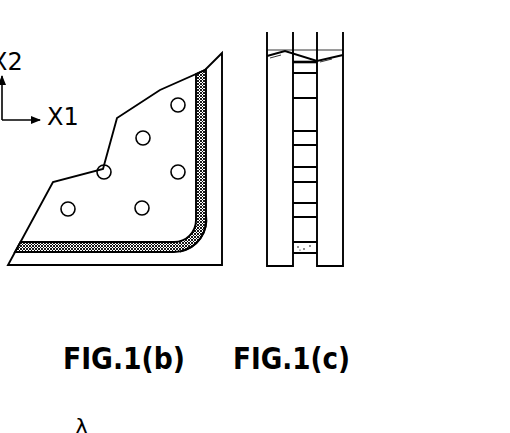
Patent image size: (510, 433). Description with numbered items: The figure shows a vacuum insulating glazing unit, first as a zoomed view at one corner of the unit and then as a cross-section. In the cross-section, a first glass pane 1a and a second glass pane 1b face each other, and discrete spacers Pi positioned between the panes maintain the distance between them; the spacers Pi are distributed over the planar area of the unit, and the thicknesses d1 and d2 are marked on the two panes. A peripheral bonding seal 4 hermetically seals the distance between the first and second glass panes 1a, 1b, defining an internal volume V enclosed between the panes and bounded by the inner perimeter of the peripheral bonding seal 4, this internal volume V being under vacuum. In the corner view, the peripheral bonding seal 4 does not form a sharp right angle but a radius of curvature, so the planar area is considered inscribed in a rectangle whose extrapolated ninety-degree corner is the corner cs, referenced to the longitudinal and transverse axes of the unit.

In FIG. 1B, the first glass pane 1a is at (218, 98).
In FIG. 1C, the first glass pane 1a is at (347, 255).
In FIG. 1C, the second glass pane 1b is at (280, 265).
In FIG. 1B, the peripheral bonding seal 4 is at (143, 252).
In FIG. 1C, the peripheral bonding seal 4 is at (315, 247).
In FIG. 1B, the discrete spacer Pi is at (142, 215).
In FIG. 1C, the discrete spacer Pi is at (305, 106).
In FIG. 1B, the corner of the rectangular planar area cs is at (195, 242).
In FIG. 1C, the internal volume V is at (305, 85).
In FIG. 1C, the thickness of first plate d1 is at (343, 32).
In FIG. 1C, the thickness of second plate d2 is at (293, 32).